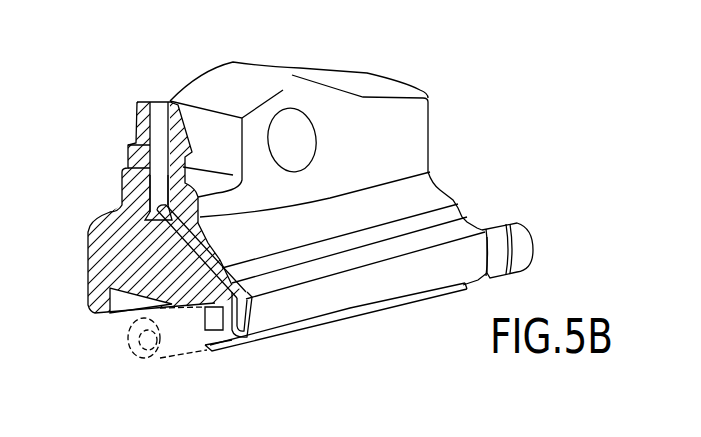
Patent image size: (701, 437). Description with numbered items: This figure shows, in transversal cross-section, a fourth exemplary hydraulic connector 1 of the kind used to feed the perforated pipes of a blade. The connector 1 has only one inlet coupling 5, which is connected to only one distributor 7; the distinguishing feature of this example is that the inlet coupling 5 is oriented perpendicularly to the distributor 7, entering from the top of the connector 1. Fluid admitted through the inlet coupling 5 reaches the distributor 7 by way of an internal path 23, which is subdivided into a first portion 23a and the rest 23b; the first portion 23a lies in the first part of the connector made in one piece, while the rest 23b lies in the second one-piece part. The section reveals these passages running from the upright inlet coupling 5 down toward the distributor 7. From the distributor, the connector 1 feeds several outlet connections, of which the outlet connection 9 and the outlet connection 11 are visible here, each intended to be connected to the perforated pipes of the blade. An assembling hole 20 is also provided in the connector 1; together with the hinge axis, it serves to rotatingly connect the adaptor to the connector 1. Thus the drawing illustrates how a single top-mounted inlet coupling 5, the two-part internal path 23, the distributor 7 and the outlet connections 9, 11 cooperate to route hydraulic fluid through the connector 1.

The hydraulic connector 1 is at (443, 58).
The inlet coupling 5 is at (138, 118).
The distributor 7 is at (261, 348).
The outlet connection 9 is at (167, 352).
The outlet connection 11 is at (533, 244).
The assembling hole 20 is at (294, 128).
The internal path 23 is at (158, 102).
The first portion of the internal path 23a is at (167, 193).
The rest of the internal path 23b is at (203, 259).